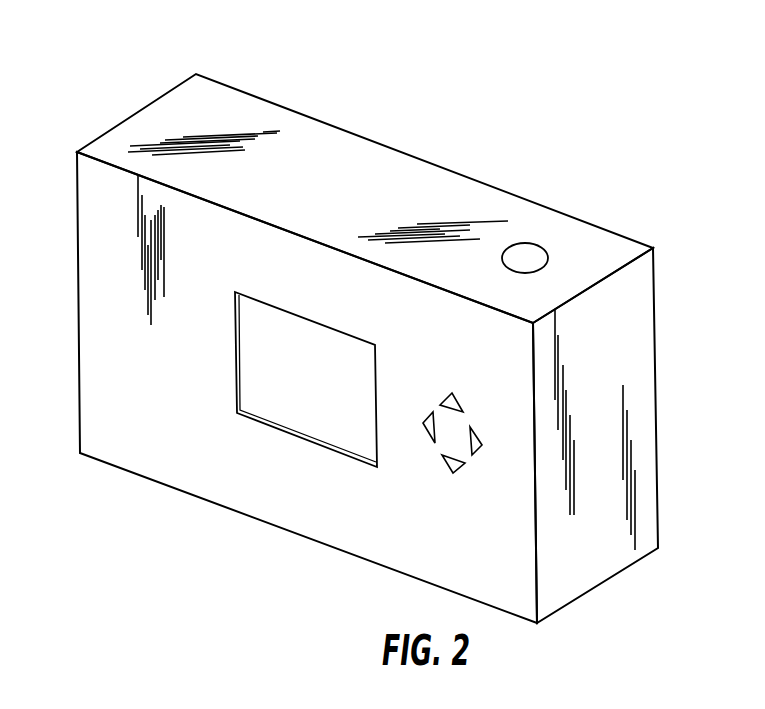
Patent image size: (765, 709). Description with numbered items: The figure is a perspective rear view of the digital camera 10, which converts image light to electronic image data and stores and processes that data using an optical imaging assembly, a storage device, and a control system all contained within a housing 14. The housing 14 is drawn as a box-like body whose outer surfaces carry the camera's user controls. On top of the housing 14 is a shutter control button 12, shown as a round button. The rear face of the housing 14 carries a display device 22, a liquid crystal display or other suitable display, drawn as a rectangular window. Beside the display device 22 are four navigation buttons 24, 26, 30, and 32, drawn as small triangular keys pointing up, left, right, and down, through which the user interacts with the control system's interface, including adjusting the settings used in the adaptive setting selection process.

The digital camera 10 is at (545, 140).
The shutter control button 12 is at (547, 246).
The housing 14 is at (145, 102).
The display device 22 is at (293, 360).
The navigation button 24 is at (452, 393).
The navigation button 26 is at (433, 412).
The navigation button 30 is at (482, 445).
The navigation button 32 is at (448, 478).